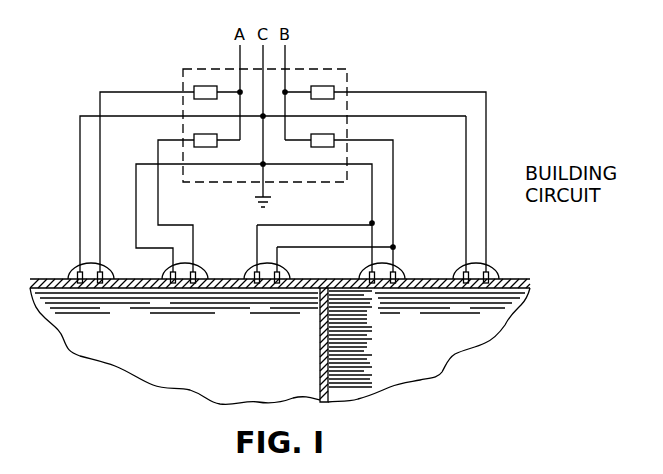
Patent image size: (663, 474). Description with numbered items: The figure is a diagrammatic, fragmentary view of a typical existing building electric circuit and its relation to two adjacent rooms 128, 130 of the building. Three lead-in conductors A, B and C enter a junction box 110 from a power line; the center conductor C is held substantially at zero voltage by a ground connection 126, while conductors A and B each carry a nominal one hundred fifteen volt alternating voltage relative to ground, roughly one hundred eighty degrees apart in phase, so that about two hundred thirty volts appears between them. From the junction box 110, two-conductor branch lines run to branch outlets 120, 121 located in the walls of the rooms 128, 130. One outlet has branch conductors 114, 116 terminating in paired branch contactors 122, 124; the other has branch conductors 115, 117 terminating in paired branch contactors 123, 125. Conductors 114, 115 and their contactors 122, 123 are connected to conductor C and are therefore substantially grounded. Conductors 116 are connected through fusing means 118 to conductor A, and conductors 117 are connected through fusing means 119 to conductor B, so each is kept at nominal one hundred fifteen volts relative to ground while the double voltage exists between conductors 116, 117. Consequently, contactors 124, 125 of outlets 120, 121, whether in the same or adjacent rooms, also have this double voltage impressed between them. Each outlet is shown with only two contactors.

The junction box 110 is at (323, 66).
The branch conductor 114 is at (80, 140).
The branch conductor 115 is at (466, 140).
The branch conductor 116 is at (100, 104).
The branch conductor 117 is at (486, 112).
The fusing means 118 is at (194, 88).
The fusing means 119 is at (334, 87).
The branch outlet 120 is at (72, 269).
The branch outlet 121 is at (288, 270).
The branch contactor 122 is at (82, 284).
The branch contactor 123 is at (257, 288).
The branch contactor 124 is at (101, 284).
The branch contactor 125 is at (277, 288).
The ground connection 126 is at (272, 199).
The room 128 is at (245, 360).
The room 130 is at (437, 360).